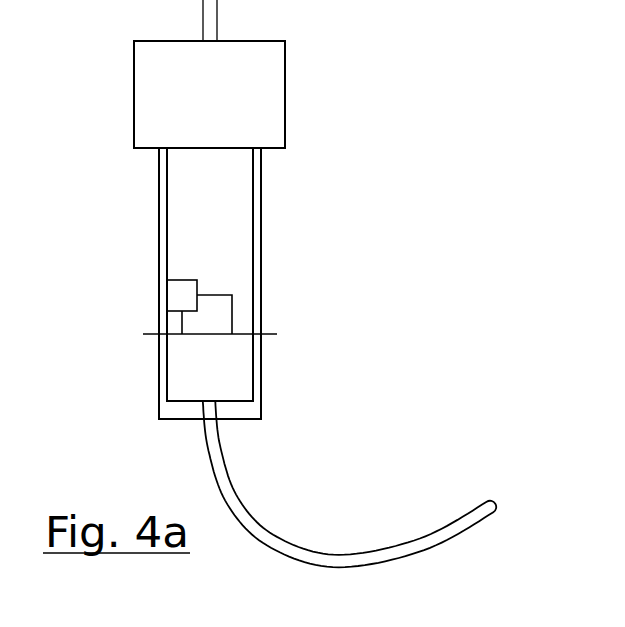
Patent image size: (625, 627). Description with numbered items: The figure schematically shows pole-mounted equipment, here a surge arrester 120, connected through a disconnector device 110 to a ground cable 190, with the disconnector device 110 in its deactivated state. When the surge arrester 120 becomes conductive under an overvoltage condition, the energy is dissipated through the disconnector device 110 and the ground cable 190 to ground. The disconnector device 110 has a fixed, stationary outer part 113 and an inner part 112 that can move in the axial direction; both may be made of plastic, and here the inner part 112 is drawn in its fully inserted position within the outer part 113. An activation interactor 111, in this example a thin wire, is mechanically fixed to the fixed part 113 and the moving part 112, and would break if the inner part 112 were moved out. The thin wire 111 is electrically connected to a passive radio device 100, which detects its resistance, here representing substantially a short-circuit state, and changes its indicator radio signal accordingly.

The surge arrester 120 is at (285, 93).
The disconnector device 110 is at (317, 283).
The outer part 113 is at (261, 197).
The inner part 112 is at (253, 255).
The activation interactor 111 is at (273, 333).
The passive radio device 100 is at (167, 295).
The ground cable 190 is at (243, 502).